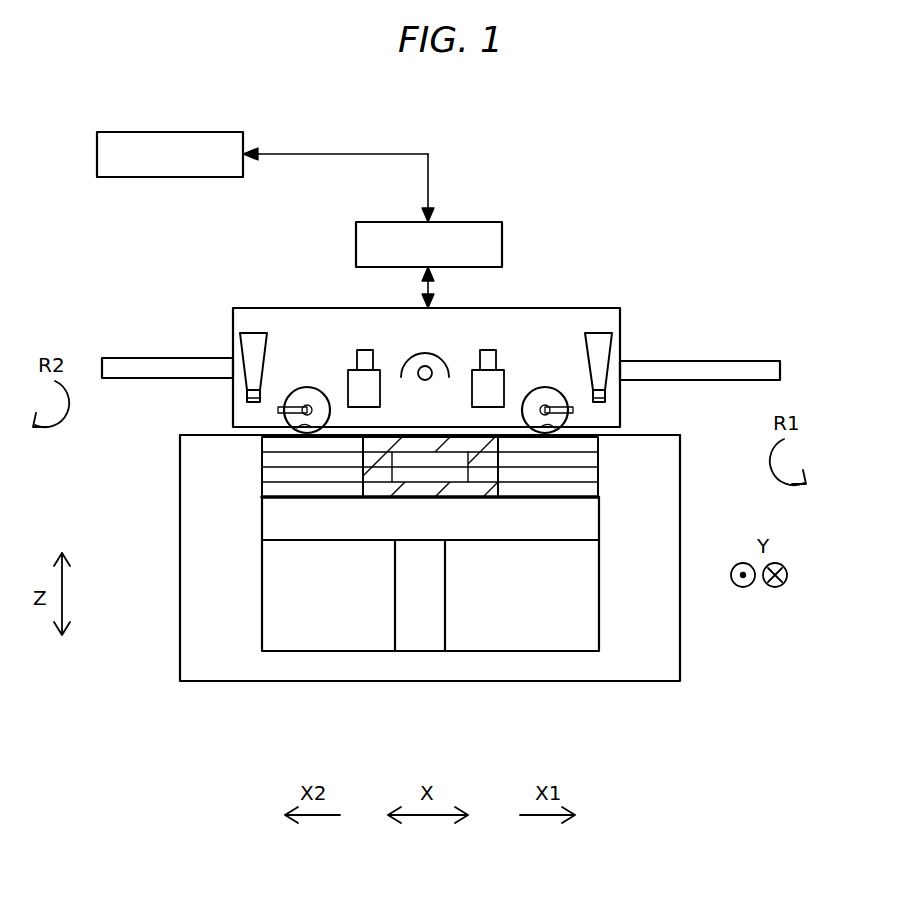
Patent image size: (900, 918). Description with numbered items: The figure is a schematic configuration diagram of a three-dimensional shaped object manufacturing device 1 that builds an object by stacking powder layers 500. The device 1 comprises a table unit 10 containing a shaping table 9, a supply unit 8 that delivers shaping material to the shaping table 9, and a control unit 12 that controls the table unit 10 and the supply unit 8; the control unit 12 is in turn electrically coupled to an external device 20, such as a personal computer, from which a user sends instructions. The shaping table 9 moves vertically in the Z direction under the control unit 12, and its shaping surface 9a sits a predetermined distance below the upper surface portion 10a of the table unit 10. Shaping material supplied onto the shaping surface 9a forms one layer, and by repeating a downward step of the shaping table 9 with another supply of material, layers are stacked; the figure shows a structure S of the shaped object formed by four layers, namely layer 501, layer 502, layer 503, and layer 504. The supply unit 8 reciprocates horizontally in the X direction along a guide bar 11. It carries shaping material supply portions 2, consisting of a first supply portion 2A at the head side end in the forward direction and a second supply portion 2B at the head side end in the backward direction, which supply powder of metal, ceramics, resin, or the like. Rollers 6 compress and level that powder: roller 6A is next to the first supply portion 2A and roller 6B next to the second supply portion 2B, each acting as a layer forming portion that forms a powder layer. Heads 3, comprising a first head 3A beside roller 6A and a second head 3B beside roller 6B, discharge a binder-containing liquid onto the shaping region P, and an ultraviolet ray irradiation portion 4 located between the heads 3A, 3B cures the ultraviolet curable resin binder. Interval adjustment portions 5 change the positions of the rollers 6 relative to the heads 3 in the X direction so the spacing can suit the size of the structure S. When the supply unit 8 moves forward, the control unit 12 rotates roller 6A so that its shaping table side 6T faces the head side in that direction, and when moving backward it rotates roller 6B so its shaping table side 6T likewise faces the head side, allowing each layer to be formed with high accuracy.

The three-dimensional shaped object manufacturing device 1 is at (805, 305).
The external device 20 is at (145, 132).
The control unit 12 is at (488, 222).
The shaping material supply portions 2 is at (422, 332).
The first supply portion 2A is at (598, 333).
The second supply portion 2B is at (250, 333).
The heads 3 is at (426, 341).
The first head 3A is at (488, 350).
The second head 3B is at (363, 350).
The ultraviolet ray irradiation portion 4 is at (428, 352).
The interval adjustment portions 5 is at (255, 398).
The rollers 6 is at (422, 348).
The roller 6A is at (545, 387).
The roller 6B is at (307, 387).
The shaping table side 6T is at (233, 421).
The supply unit 8 is at (233, 318).
The guide bar 11 is at (720, 361).
The table unit 10 is at (180, 497).
The upper surface portion 10a is at (207, 437).
The shaping table 9 is at (293, 525).
The shaping surface 9a is at (265, 498).
The layers 500 is at (421, 594).
The layer 501 is at (260, 492).
The layer 502 is at (260, 472).
The layer 503 is at (260, 460).
The layer 504 is at (260, 440).
The structure S is at (358, 487).
The shaping region P is at (470, 489).